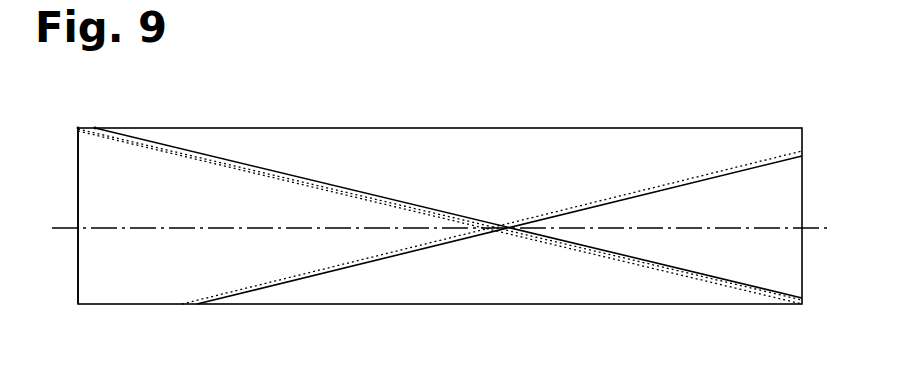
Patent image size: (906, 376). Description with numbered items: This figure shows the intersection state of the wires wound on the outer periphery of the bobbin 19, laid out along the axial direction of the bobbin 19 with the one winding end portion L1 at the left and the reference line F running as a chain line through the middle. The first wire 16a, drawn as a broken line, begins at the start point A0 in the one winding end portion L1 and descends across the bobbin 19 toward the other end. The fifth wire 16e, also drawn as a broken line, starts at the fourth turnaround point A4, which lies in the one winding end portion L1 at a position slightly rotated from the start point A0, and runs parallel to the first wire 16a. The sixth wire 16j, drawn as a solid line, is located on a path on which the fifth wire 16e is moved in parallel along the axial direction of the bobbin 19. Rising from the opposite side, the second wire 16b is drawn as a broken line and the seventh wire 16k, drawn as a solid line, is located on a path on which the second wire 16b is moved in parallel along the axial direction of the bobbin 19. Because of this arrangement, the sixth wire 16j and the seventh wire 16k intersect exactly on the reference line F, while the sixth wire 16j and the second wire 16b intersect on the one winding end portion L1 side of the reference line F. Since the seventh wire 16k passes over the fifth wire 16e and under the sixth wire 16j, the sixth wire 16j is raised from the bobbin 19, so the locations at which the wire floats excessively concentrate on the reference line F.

The bobbin 19 is at (609, 133).
The one winding end portion L1 is at (57, 210).
The reference line F is at (429, 228).
The start point A0 is at (75, 112).
The fourth turnaround point A4 is at (90, 127).
The sixth wire 16j is at (362, 190).
The first wire 16a is at (170, 153).
The fifth wire 16e is at (248, 170).
The seventh wire 16k is at (446, 245).
The second wire 16b is at (243, 288).